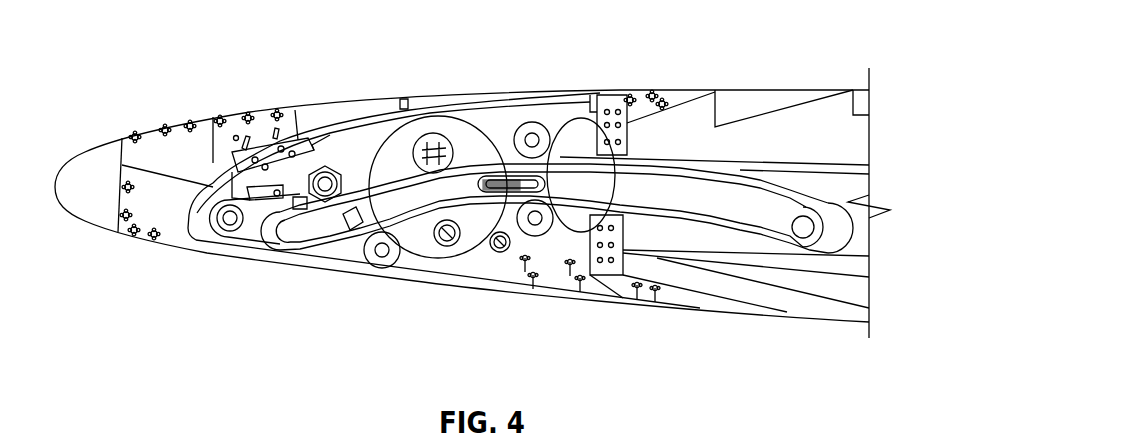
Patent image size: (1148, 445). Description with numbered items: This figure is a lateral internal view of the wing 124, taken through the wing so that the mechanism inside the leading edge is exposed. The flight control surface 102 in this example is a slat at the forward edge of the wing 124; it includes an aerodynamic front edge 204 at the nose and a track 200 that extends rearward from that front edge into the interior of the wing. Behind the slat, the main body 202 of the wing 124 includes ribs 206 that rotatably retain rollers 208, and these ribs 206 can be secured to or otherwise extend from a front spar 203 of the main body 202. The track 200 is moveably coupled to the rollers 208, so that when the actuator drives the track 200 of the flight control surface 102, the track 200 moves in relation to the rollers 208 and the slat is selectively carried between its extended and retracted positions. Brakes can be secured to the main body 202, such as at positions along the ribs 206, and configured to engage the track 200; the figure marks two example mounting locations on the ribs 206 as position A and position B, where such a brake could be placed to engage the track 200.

The flight control surface 102 is at (235, 100).
The wing 124 is at (158, 133).
The track 200 is at (690, 198).
The main body 202 is at (777, 90).
The front spar 203 is at (853, 190).
The aerodynamic front edge 204 is at (83, 221).
The ribs 206 is at (515, 138).
The rollers 208 is at (325, 176).
The position A is at (433, 117).
The position B is at (613, 147).